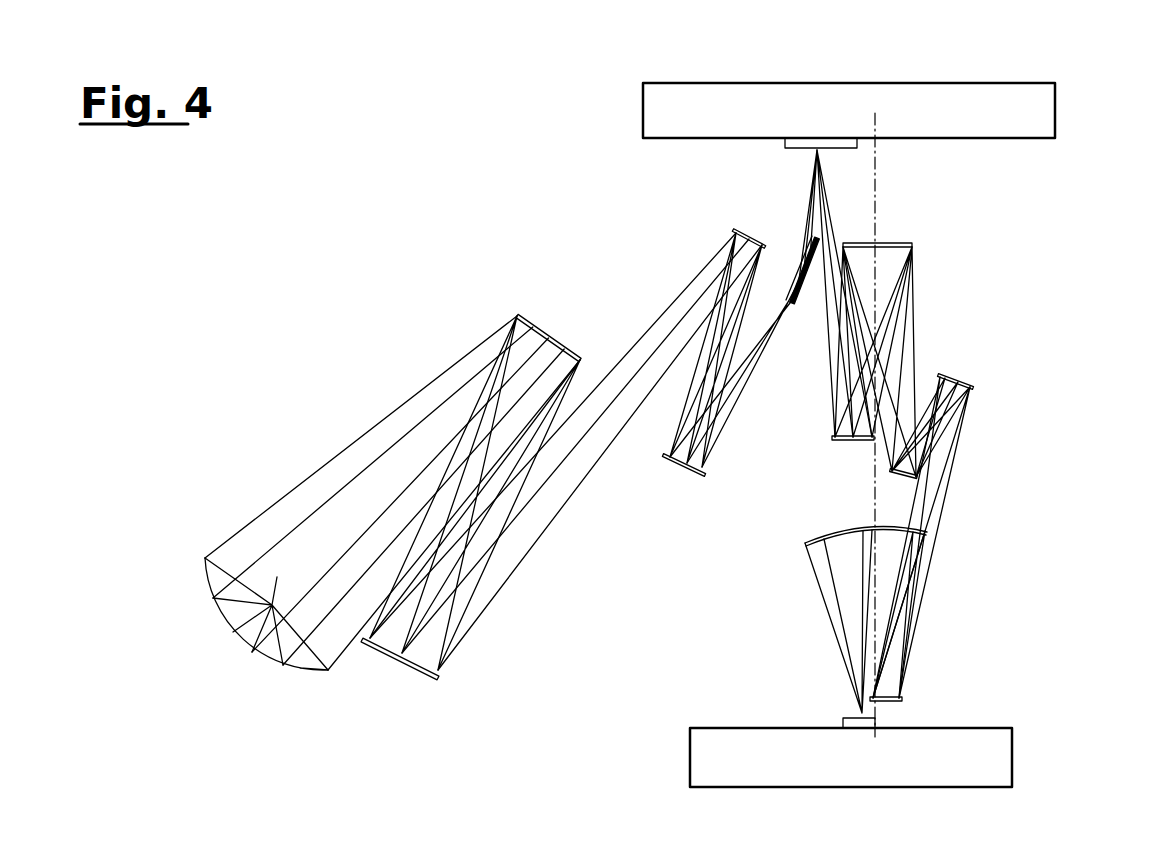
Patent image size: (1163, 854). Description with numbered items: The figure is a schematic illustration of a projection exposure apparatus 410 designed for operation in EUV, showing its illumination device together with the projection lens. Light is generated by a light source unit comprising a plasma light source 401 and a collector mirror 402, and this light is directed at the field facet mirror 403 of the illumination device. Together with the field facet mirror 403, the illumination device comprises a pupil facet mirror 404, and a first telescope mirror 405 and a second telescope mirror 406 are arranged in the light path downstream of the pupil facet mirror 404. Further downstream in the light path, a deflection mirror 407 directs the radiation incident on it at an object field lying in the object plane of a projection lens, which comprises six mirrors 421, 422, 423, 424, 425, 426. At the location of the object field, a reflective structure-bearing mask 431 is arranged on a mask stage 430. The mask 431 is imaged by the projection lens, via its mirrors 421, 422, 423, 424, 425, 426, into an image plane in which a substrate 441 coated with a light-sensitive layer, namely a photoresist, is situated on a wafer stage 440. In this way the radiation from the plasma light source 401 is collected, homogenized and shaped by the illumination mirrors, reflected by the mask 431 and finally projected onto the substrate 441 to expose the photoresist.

The projection exposure apparatus 410 is at (576, 172).
The plasma light source 401 is at (272, 604).
The collector mirror 402 is at (245, 647).
The field facet mirror 403 is at (549, 307).
The pupil facet mirror 404 is at (386, 672).
The first telescope mirror 405 is at (764, 240).
The second telescope mirror 406 is at (684, 462).
The deflection mirror 407 is at (803, 284).
The mirror 421 is at (832, 441).
The mirror 422 is at (898, 243).
The mirror 423 is at (896, 478).
The mirror 424 is at (962, 372).
The mirror 425 is at (902, 700).
The mirror 426 is at (838, 531).
The mask stage 430 is at (1017, 114).
The reflective structure-bearing mask 431 is at (784, 142).
The wafer stage 440 is at (973, 760).
The substrate 441 is at (843, 722).